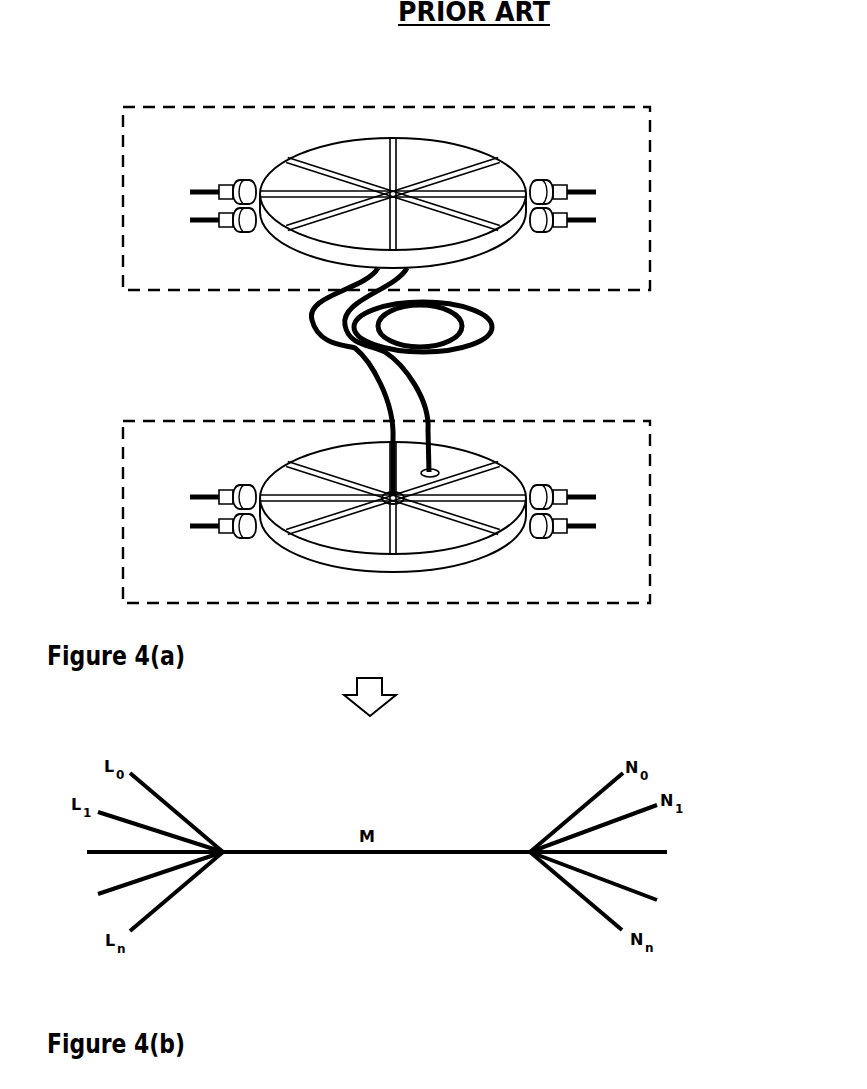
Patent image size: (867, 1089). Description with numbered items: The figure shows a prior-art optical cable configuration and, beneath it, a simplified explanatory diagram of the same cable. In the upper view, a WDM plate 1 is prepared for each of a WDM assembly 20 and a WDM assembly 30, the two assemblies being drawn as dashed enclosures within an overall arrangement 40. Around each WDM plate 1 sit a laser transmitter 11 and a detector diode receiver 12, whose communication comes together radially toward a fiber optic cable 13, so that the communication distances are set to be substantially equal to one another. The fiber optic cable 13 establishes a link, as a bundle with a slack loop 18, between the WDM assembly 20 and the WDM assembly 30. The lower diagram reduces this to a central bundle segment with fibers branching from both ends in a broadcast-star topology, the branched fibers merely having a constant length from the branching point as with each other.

The WDM plate 1 is at (493, 243).
The laser transmitter 11 is at (231, 228).
The detector diode receiver 12 is at (233, 185).
The fiber optic cable 13 is at (470, 345).
The extra-length loop of optical fiber 18 is at (493, 327).
The WDM assembly 20 is at (180, 284).
The WDM assembly 30 is at (183, 426).
The optical wiring system 40 is at (648, 361).